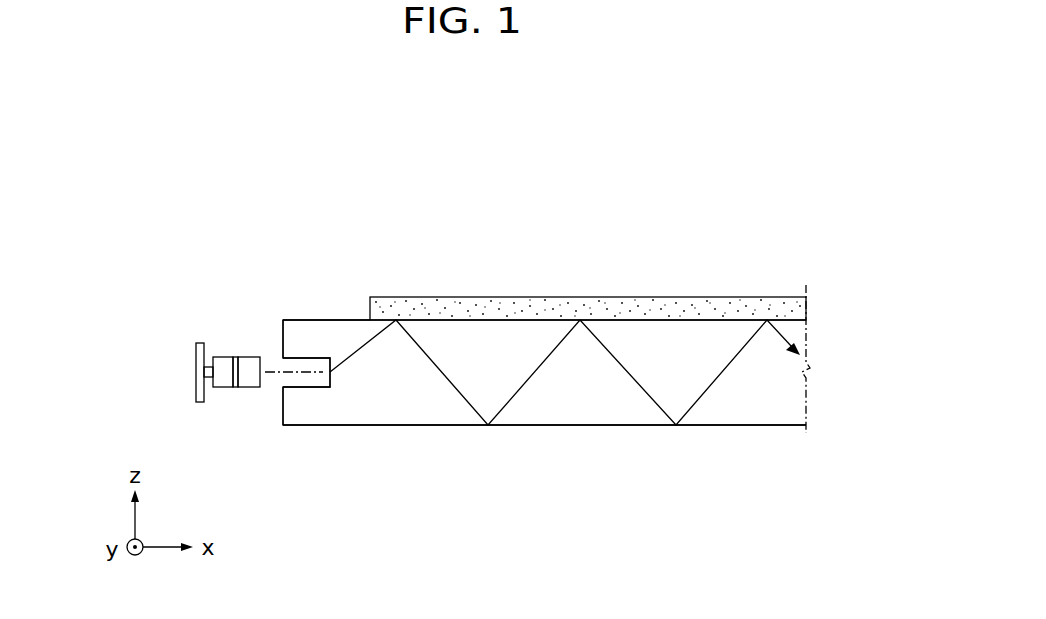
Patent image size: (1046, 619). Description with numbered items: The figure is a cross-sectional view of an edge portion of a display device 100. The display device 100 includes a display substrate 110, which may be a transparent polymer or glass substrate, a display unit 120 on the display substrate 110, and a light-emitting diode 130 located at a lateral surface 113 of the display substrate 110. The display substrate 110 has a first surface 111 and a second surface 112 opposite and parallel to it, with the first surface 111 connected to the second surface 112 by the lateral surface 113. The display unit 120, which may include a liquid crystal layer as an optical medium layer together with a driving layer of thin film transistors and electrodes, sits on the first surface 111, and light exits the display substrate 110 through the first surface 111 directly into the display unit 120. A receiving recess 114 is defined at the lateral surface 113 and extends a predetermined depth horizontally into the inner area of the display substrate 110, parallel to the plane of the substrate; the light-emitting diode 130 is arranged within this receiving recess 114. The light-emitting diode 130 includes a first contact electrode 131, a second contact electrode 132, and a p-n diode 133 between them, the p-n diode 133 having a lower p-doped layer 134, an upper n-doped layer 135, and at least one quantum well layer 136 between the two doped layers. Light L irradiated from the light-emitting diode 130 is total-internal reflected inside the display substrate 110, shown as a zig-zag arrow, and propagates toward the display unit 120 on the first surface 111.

The display device 100 is at (748, 203).
The display substrate 110 is at (800, 395).
The first surface 111 is at (340, 320).
The second surface 112 is at (381, 425).
The lateral surface 113 is at (282, 408).
The receiving recess 114 is at (281, 380).
The display unit 120 is at (800, 310).
The light-emitting diode 130 is at (152, 258).
The first contact electrode 131 is at (196, 347).
The second contact electrode 132 is at (196, 395).
The p-n diode 133 is at (282, 280).
The lower p-doped layer 134 is at (223, 357).
The upper n-doped layer 135 is at (253, 357).
The quantum well layer 136 is at (237, 357).
The light L is at (520, 392).